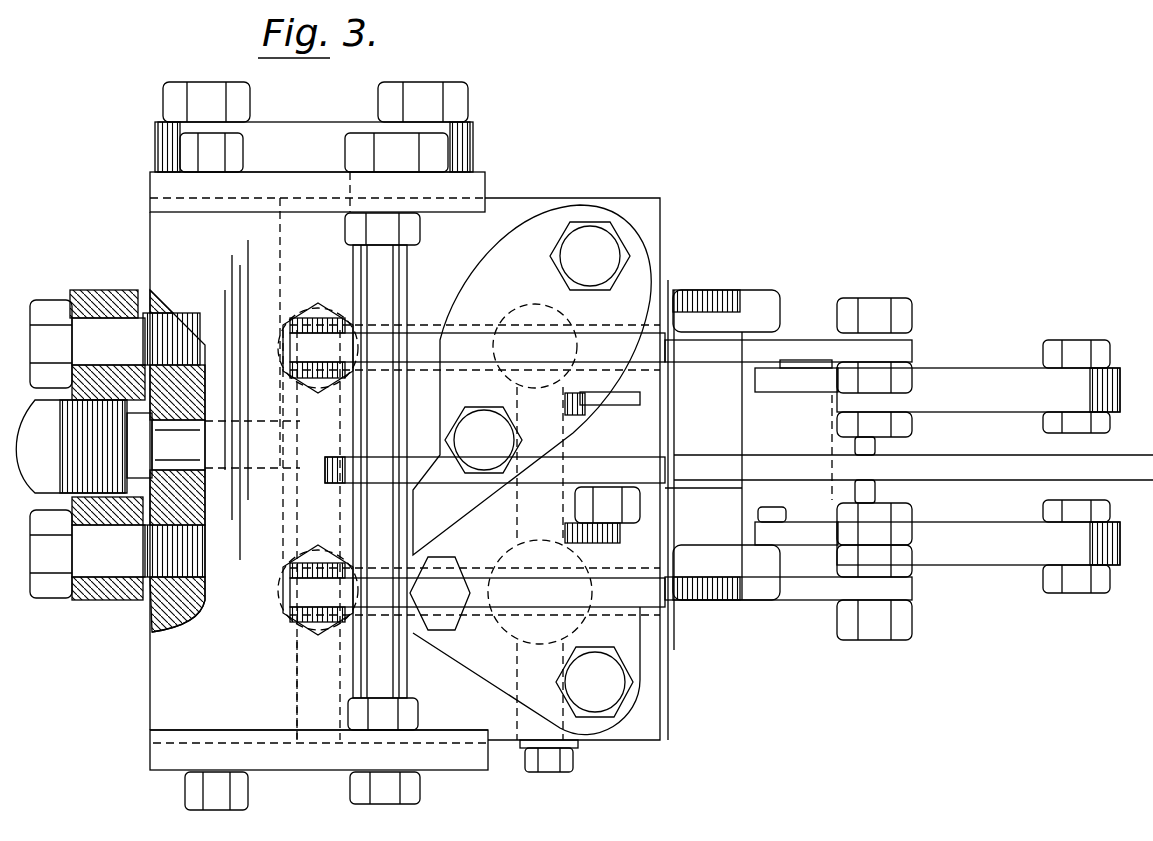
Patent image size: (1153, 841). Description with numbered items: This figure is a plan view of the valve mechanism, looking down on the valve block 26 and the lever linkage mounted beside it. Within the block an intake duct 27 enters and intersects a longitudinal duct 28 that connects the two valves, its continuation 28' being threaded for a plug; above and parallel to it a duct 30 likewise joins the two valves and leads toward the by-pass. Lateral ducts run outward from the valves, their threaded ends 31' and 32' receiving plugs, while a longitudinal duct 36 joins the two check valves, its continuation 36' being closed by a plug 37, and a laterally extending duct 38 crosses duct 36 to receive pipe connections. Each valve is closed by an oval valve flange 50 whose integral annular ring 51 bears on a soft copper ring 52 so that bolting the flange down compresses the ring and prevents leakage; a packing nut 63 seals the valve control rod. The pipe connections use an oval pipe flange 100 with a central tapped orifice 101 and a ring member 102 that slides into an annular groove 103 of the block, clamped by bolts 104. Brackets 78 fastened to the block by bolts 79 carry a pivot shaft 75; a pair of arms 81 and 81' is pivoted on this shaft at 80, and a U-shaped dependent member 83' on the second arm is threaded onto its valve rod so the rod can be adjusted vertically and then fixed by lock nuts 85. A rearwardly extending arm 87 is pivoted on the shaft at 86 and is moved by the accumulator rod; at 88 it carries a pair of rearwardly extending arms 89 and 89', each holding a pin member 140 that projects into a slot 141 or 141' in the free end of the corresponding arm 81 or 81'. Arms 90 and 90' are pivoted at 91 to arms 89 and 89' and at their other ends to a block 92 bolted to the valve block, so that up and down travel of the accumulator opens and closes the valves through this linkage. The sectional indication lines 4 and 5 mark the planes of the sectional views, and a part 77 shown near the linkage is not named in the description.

The valve block 26 is at (150, 238).
The duct 27 is at (140, 606).
The longitudinal duct 28 is at (252, 477).
The duct continuation 28' is at (305, 721).
The duct 30 is at (278, 488).
The duct end 31' is at (629, 279).
The duct end 32' is at (691, 633).
The longitudinal duct 36 is at (511, 422).
The duct continuation 36' is at (525, 656).
The plug 37 is at (549, 762).
The laterally extending duct 38 is at (670, 430).
The valve flange 50 is at (280, 228).
The annular ring 51 is at (425, 335).
The ring 52 is at (415, 478).
The packing nut 63 is at (310, 320).
The pivot shaft 75 is at (360, 802).
The adjusting nut 77 is at (576, 518).
The brackets 78 is at (152, 752).
The bolts 79 is at (185, 795).
The pivot connection 80 is at (400, 356).
The arm 81 is at (788, 325).
The arm 81' is at (788, 596).
The U-shaped dependent member 83' is at (317, 567).
The lock nuts 85 is at (318, 330).
The pivot connection 86 is at (392, 470).
The rearwardly extending arm 87 is at (762, 470).
The pivot connection 88 is at (672, 487).
The rearwardly extending arm 89 is at (796, 400).
The rearwardly extending arm 89' is at (796, 516).
The arm 90 is at (978, 370).
The arm 90' is at (978, 564).
The pivot connection 91 is at (1078, 386).
The block 92 is at (676, 575).
The pipe flange 100 is at (103, 278).
The central tapped orifice 101 is at (58, 500).
The ring member 102 is at (197, 332).
The annular groove 103 is at (213, 352).
The bolts 104 is at (45, 548).
The pin member 140 is at (905, 480).
The slot 141 is at (874, 363).
The slot 141' is at (863, 576).
The section line 4- 4 is at (290, 346).
The section line 5- 5 is at (290, 590).